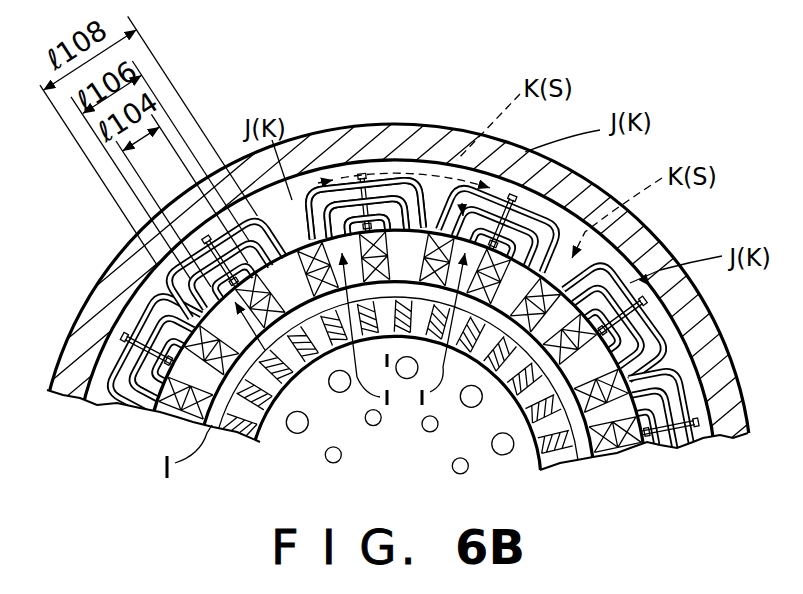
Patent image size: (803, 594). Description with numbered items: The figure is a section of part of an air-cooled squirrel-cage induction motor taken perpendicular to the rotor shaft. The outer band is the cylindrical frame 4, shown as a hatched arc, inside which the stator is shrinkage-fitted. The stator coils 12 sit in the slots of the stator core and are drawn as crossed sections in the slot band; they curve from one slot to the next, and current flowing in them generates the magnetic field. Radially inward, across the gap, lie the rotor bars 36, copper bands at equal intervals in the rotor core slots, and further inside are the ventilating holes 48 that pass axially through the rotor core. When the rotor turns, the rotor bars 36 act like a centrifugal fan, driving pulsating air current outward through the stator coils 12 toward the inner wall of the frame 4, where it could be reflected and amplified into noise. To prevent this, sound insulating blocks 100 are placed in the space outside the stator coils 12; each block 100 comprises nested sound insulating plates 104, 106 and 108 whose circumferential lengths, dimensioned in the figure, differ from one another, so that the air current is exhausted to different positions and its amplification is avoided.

The frame 4 is at (583, 187).
The stator coils 12 is at (507, 293).
The rotor bars 36 is at (577, 460).
The ventilating holes 48 is at (293, 433).
The sound insulating block 100 is at (352, 176).
The sound insulating plate 104 is at (440, 178).
The sound insulating plate 106 is at (466, 165).
The sound insulating plate 108 is at (372, 205).